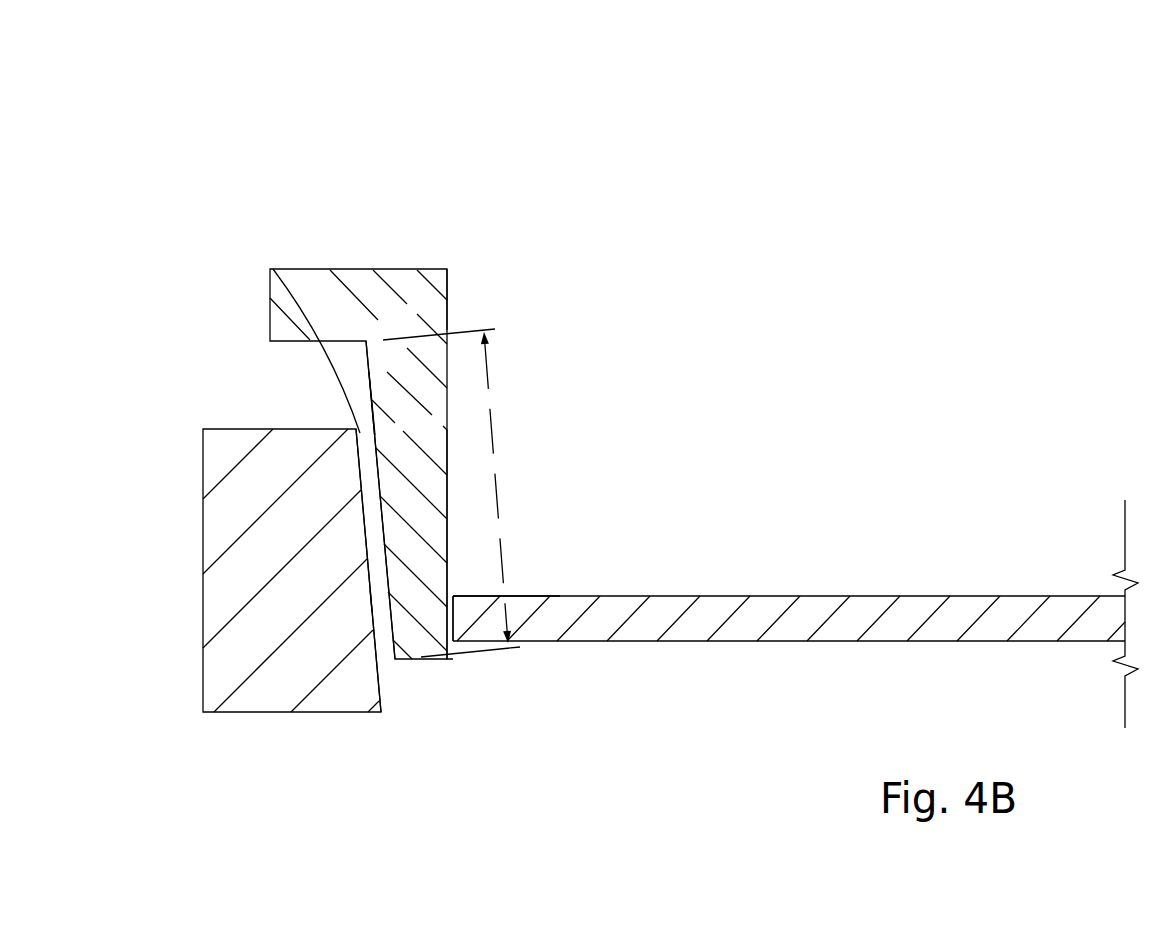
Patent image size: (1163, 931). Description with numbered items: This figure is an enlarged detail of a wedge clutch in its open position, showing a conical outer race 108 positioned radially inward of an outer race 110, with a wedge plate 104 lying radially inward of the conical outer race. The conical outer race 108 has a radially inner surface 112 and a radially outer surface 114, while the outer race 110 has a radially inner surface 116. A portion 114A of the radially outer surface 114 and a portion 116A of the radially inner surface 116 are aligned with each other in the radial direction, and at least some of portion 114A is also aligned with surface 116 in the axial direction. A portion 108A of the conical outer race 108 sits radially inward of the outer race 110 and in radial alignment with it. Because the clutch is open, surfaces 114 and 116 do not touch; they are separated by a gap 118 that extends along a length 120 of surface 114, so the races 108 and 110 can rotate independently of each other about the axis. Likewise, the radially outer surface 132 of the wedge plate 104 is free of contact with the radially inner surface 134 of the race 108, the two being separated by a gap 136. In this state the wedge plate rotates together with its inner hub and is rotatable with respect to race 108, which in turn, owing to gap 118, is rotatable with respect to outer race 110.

The wedge plate 104 is at (1001, 584).
The conical outer race 108 is at (389, 172).
The portion of conical outer race 108A is at (413, 478).
The outer race 110 is at (180, 442).
The radially inner surface 112 is at (447, 562).
The radially outer surface 114 is at (376, 372).
The portion of radially outer surface 114A is at (375, 435).
The radially inner surface 116 is at (369, 675).
The portion of radially inner surface 116A is at (371, 597).
The gap 118 is at (273, 269).
The length 120 is at (498, 498).
The radially outer surface 132 is at (455, 623).
The radially inner surface 134 is at (447, 308).
The gap 136 is at (450, 638).